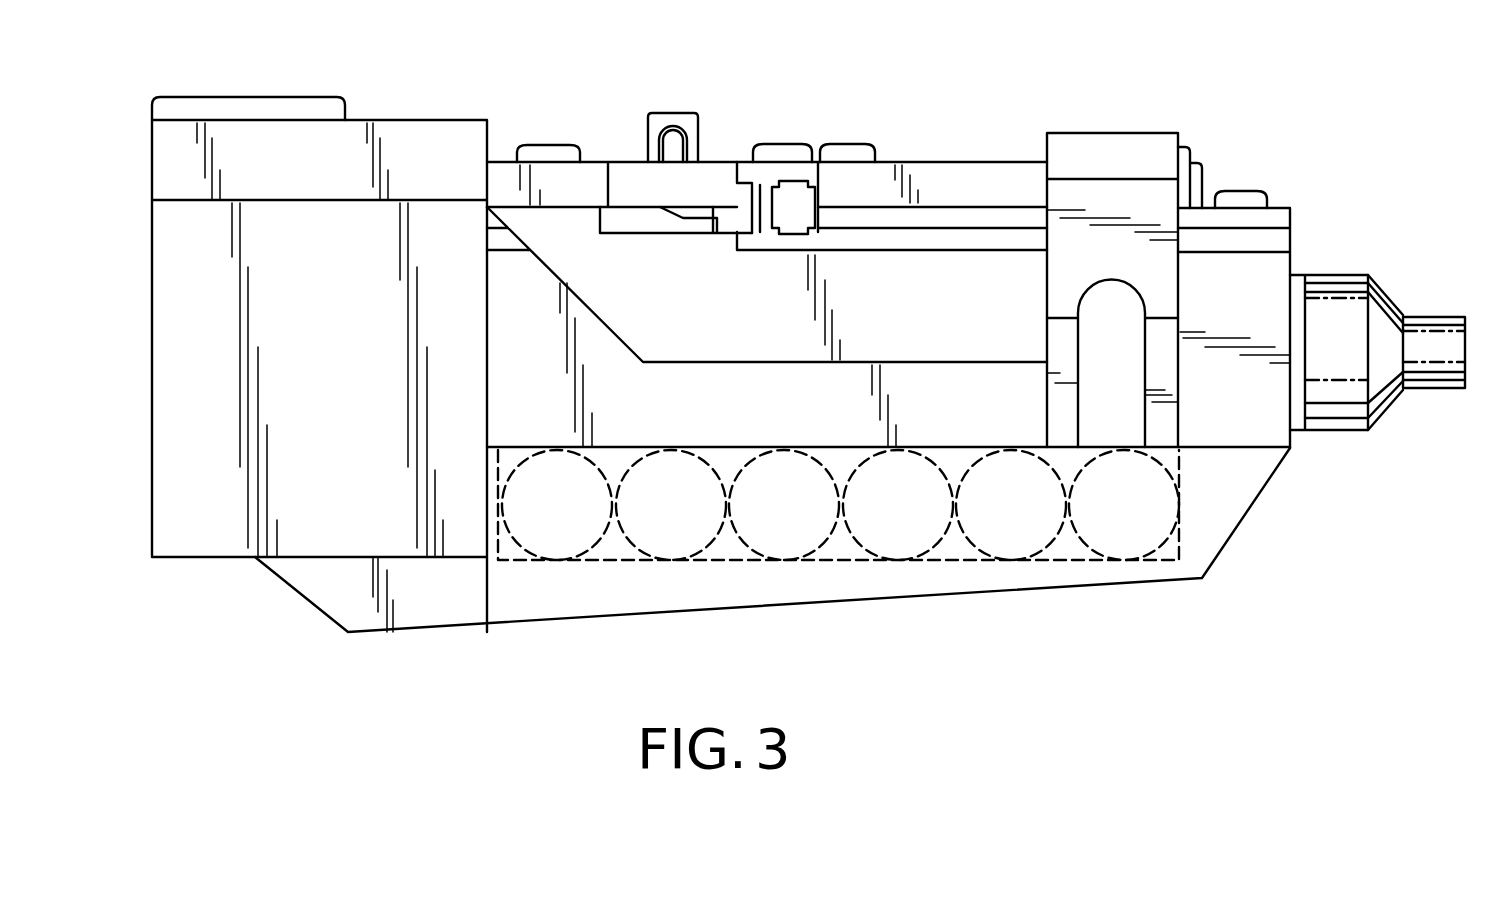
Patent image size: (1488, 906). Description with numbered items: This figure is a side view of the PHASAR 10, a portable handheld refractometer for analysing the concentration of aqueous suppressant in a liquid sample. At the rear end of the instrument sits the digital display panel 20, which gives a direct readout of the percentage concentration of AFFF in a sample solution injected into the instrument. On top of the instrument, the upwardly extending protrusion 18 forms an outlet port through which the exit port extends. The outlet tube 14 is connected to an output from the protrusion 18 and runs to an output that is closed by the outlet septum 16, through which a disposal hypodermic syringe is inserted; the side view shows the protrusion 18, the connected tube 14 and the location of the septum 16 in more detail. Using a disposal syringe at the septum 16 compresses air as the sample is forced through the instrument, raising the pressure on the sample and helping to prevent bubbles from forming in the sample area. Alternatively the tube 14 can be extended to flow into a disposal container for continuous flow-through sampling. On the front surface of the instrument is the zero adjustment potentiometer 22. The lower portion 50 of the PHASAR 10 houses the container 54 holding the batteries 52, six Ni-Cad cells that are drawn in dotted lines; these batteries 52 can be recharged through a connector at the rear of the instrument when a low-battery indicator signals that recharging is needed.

The PHASAR 10 is at (965, 125).
The outlet tube 14 is at (698, 163).
The outlet septum 16 is at (790, 185).
The upwardly extending protrusion 18 is at (670, 113).
The digital display panel 20 is at (280, 100).
The zero adjustment potentiometer 22 is at (1383, 305).
The lower portion 50 is at (1262, 505).
The batteries 52 is at (1082, 537).
The container 54 is at (1182, 543).